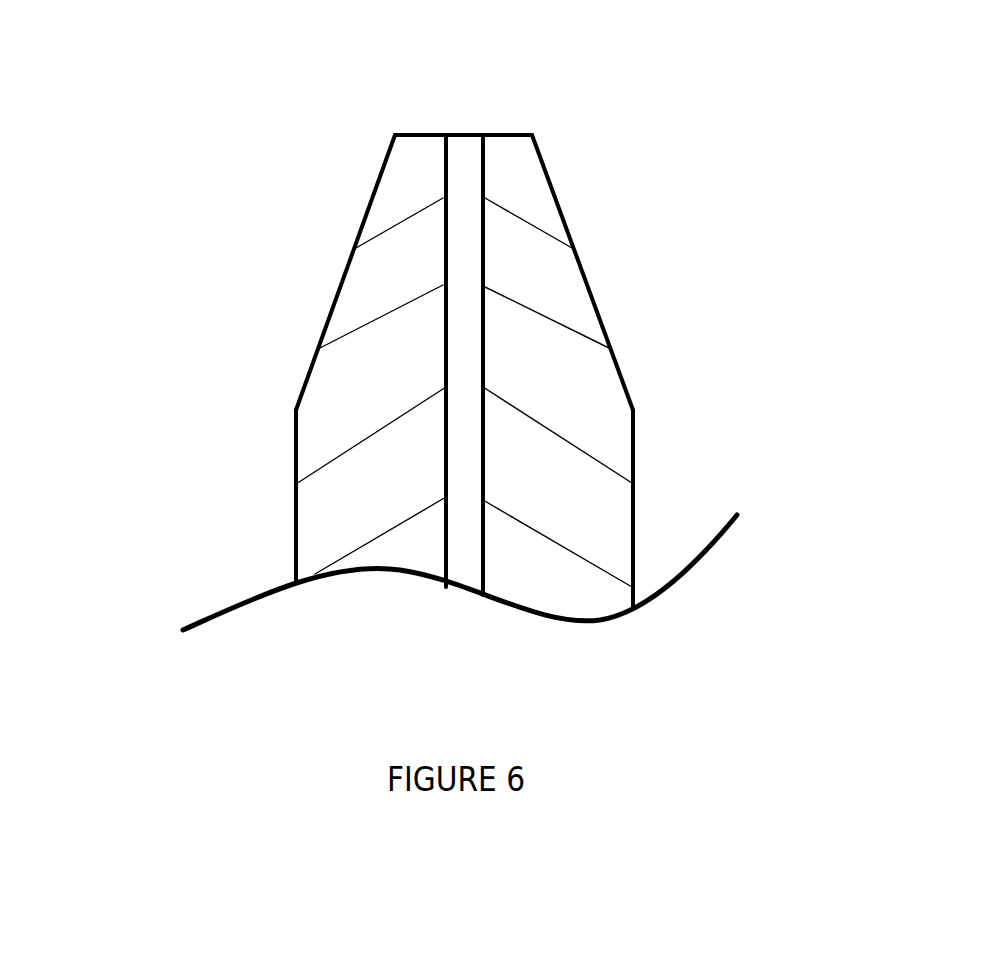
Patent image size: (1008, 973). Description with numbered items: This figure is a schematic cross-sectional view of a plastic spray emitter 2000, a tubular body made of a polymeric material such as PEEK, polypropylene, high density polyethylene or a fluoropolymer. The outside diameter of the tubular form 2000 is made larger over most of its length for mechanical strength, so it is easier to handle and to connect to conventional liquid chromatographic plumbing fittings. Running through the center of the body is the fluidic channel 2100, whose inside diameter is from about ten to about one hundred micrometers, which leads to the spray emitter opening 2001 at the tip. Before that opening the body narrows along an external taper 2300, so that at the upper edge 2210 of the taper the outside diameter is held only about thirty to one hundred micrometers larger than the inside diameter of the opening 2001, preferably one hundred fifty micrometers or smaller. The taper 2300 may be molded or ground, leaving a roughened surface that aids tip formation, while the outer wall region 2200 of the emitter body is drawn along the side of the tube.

The spray emitter 2000 is at (320, 135).
The spray emitter opening 2001 is at (465, 127).
The fluidic channel 2100 is at (483, 357).
The right side wall 2200 is at (637, 455).
The outside diameter of the spray emitter opening 2210 is at (533, 133).
The taper 2300 is at (350, 252).